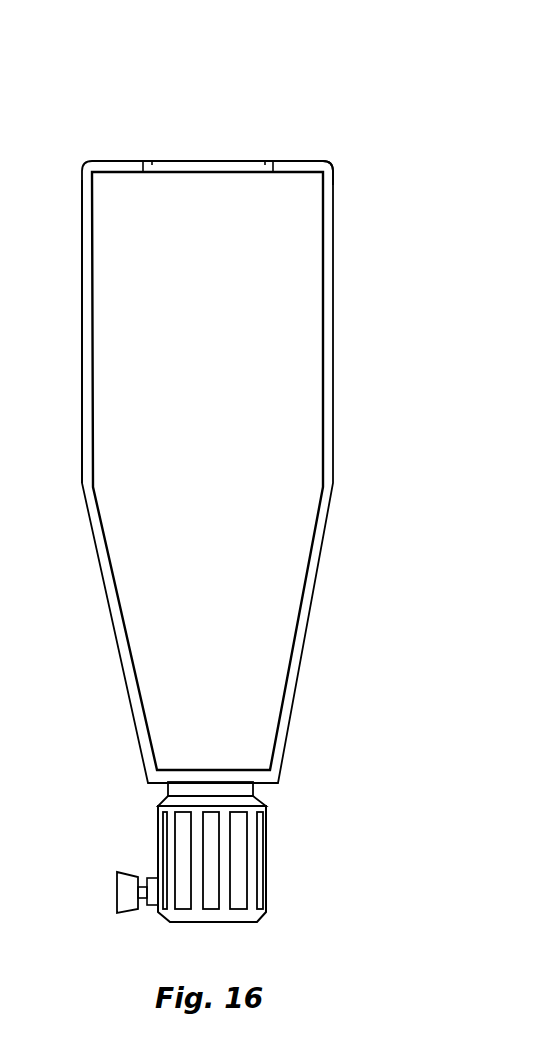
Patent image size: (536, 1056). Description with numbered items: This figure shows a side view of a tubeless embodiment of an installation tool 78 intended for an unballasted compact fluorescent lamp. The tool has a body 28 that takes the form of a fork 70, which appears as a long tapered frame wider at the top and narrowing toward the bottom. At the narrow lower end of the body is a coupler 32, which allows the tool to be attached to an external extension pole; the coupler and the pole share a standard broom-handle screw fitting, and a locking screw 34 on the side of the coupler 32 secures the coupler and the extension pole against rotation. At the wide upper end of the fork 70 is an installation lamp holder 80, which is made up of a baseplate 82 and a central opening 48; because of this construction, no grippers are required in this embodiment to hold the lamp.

The installation tool 78 is at (314, 92).
The body 28 is at (347, 356).
The fork 70 is at (85, 352).
The central opening 48 is at (209, 151).
The baseplate 82 is at (120, 167).
The installation lamp holder 80 is at (353, 160).
The coupler 32 is at (267, 875).
The locking screw 34 is at (117, 885).